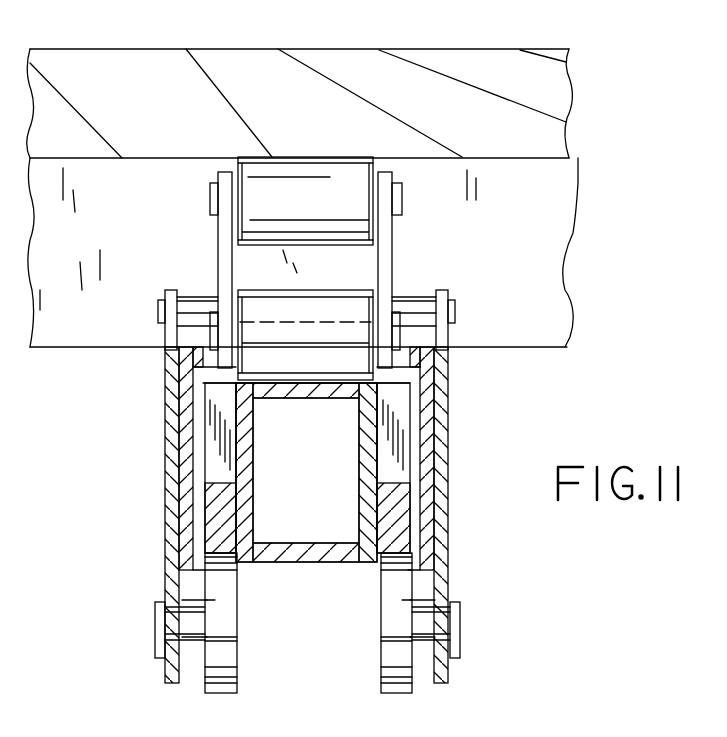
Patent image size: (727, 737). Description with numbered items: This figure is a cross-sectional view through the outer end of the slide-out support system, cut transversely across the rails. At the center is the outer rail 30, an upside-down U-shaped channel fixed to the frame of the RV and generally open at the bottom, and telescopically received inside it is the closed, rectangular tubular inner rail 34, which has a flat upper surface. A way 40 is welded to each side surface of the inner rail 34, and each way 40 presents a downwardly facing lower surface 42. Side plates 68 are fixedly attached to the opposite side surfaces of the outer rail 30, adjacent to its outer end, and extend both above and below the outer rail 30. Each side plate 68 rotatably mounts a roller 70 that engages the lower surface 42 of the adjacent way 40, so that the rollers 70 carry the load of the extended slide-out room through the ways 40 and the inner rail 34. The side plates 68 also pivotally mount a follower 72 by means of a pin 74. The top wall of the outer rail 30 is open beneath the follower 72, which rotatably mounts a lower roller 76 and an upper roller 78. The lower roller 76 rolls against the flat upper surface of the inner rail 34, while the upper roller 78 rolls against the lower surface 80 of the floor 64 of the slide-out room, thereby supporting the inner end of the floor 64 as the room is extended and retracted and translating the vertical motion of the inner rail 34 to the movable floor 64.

The floor 64 is at (511, 52).
The lower surface 80 is at (527, 158).
The upper roller 78 is at (390, 164).
The lower roller 76 is at (352, 288).
The follower 72 is at (218, 265).
The pin 74 is at (452, 313).
The side plates 68 is at (170, 567).
The outer rail 30 is at (427, 435).
The way 40 is at (203, 442).
The inner rail 34 is at (322, 562).
The lower surface 42 is at (218, 556).
The roller 70 is at (228, 693).